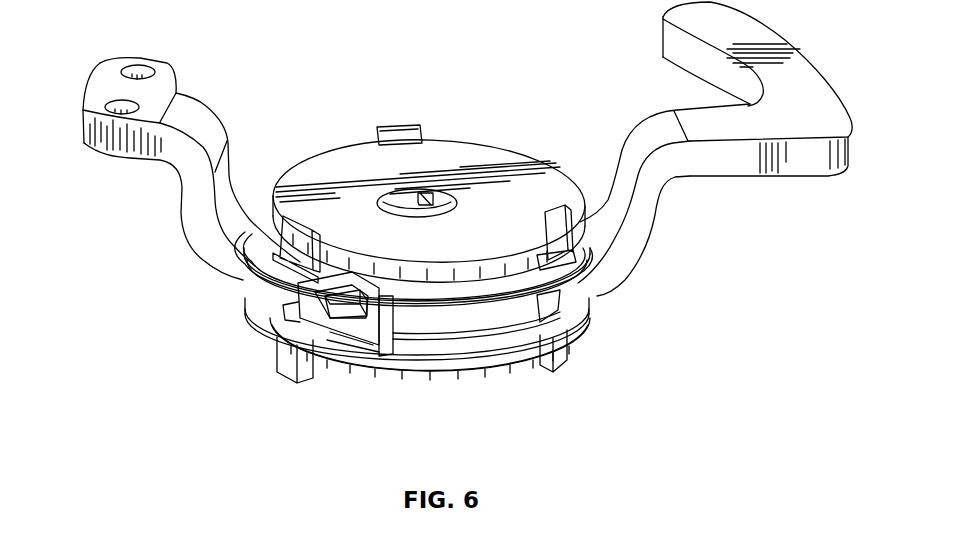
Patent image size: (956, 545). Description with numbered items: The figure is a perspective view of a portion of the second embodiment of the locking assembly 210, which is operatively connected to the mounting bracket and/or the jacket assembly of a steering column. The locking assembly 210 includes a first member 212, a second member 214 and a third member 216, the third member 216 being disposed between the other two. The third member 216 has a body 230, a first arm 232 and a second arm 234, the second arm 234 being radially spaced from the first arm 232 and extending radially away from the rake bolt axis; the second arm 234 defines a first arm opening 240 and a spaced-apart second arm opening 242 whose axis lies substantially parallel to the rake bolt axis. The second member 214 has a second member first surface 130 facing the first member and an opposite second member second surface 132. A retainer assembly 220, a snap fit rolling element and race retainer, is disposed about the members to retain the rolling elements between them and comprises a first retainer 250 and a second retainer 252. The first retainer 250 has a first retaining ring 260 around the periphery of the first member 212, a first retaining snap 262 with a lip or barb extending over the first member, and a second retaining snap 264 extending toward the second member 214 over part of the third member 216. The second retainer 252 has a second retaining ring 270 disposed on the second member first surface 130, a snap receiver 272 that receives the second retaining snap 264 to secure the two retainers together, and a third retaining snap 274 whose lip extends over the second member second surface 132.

The locking assembly 210 is at (172, 409).
The first member 212 is at (493, 380).
The second member 214 is at (475, 148).
The third member 216 is at (513, 310).
The retainer assembly 220 is at (262, 337).
The body 230 is at (408, 328).
The first arm 232 is at (692, 137).
The second arm 234 is at (158, 92).
The first arm opening 240 is at (108, 100).
The second arm opening 242 is at (140, 64).
The first retainer 250 is at (590, 308).
The second retainer 252 is at (569, 220).
The first retaining ring 260 is at (437, 360).
The first retaining snap 262 is at (292, 357).
The second retaining snap 264 is at (350, 304).
The second retaining ring 270 is at (264, 207).
The snap receiver 272 is at (305, 302).
The third retaining snap 274 is at (397, 135).
The second member first surface 130 is at (551, 200).
The second member second surface 132 is at (322, 178).